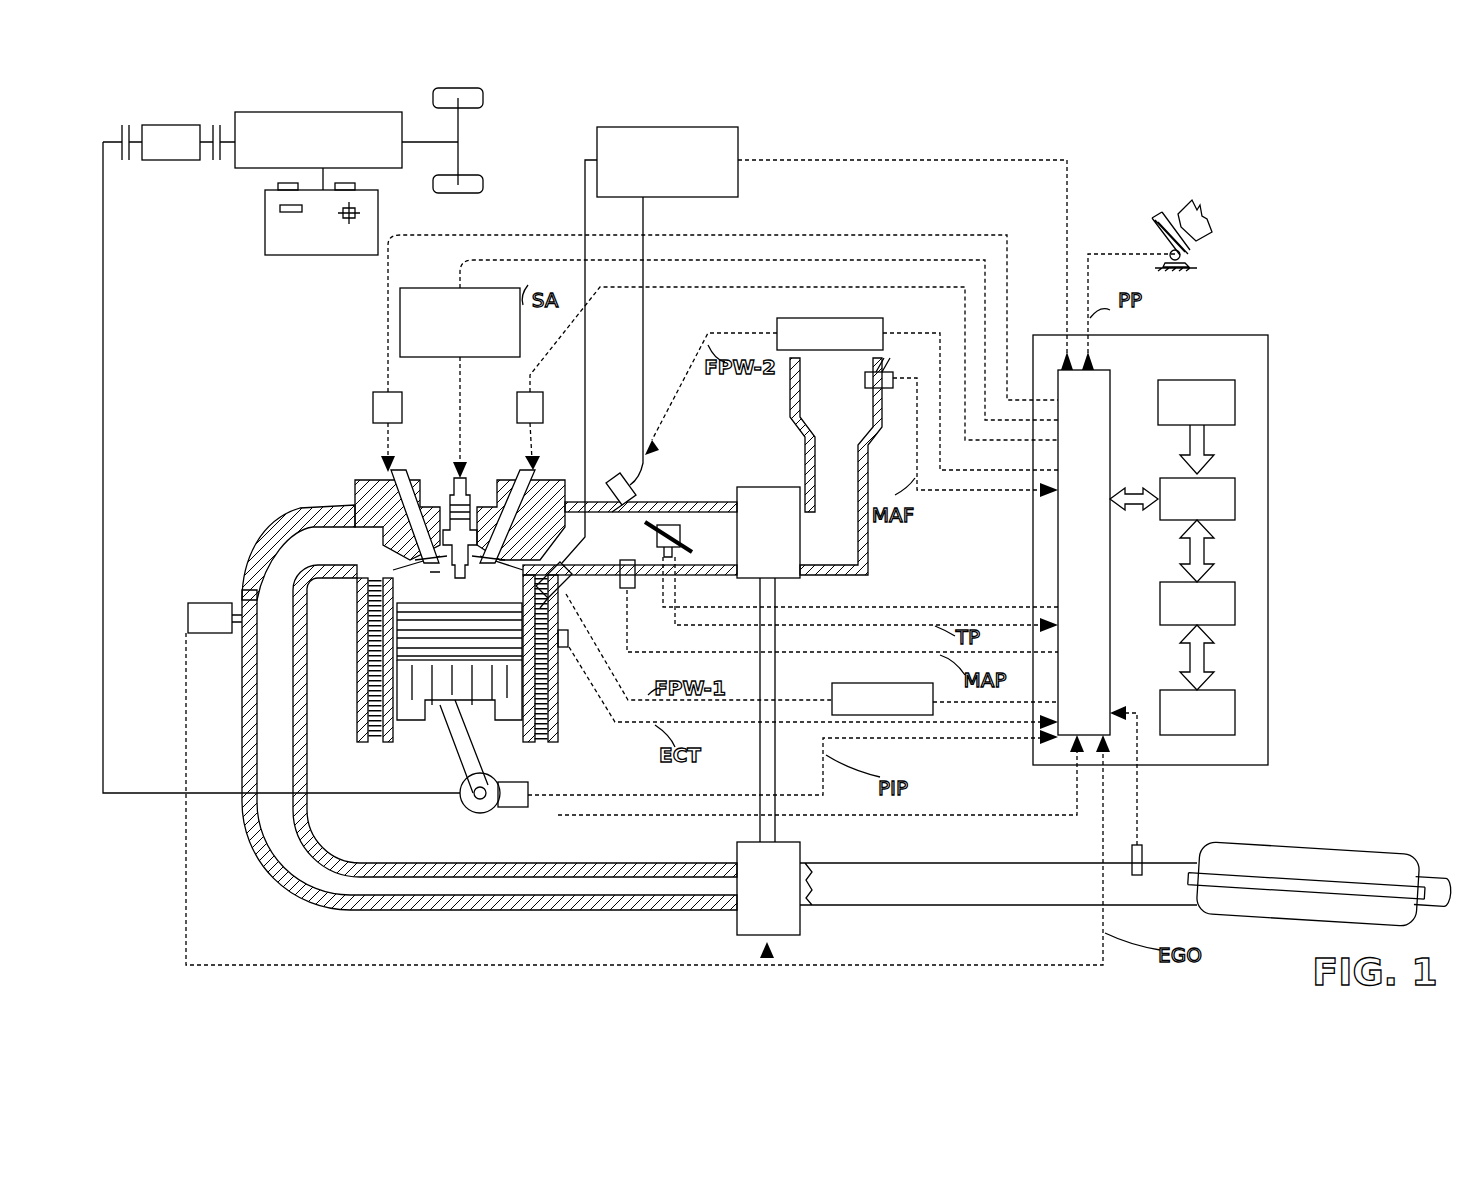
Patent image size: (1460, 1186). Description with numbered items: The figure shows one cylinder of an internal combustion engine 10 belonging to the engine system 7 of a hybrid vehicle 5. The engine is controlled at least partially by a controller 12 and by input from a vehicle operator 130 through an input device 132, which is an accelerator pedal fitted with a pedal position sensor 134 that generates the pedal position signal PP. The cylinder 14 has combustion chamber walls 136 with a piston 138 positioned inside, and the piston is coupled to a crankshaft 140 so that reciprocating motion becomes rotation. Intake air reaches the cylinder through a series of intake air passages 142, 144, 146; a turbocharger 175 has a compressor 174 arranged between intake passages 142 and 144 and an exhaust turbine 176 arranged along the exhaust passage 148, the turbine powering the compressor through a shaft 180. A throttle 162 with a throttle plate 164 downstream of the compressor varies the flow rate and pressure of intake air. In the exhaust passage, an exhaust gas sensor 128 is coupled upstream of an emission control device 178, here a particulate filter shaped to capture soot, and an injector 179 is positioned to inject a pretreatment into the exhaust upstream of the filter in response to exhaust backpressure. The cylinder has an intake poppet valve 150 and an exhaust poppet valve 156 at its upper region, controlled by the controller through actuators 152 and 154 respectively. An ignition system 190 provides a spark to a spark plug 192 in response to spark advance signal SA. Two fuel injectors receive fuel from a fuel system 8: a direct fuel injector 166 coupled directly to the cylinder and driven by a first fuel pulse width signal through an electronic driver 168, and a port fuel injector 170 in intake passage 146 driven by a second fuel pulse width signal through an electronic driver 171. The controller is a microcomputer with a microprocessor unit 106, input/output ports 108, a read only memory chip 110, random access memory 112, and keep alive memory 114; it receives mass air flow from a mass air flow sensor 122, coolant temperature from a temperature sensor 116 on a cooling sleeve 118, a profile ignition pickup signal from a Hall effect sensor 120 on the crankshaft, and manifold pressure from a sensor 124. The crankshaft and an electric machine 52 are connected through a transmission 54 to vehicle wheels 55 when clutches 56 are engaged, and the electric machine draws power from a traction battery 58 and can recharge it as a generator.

The vehicle 5 is at (1395, 126).
The engine system 7 is at (1369, 778).
The fuel system 8 is at (705, 127).
The internal combustion engine 10 is at (247, 409).
The controller 12 is at (1268, 335).
The cylinder 14 is at (365, 600).
The electric machine 52 is at (170, 160).
The transmission 54 is at (380, 168).
The vehicle wheels 55 is at (462, 193).
The clutches 56 is at (122, 128).
The traction battery 58 is at (318, 255).
The microprocessor unit 106 is at (1235, 490).
The input/output ports 108 is at (1110, 375).
The read only memory chip 110 is at (1235, 398).
The random access memory 112 is at (1235, 598).
The keep alive memory 114 is at (1235, 708).
The temperature sensor 116 is at (572, 660).
The cooling sleeve 118 is at (560, 722).
The Hall effect sensor 120 is at (512, 807).
The mass air flow sensor 122 is at (888, 372).
The manifold pressure sensor 124 is at (630, 590).
The exhaust gas sensor 128 is at (188, 610).
The vehicle operator 130 is at (1212, 220).
The input device 132 is at (1157, 232).
The pedal position sensor 134 is at (1185, 258).
The combustion chamber walls 136 is at (393, 735).
The piston 138 is at (447, 705).
The crankshaft 140 is at (472, 808).
The intake air passage 142 is at (836, 466).
The intake air passage 144 is at (651, 526).
The intake air passage 146 is at (620, 538).
The exhaust passage 148 is at (298, 552).
The intake poppet valve 150 is at (492, 540).
The actuator 152 is at (517, 405).
The actuator 154 is at (373, 400).
The exhaust poppet valve 156 is at (395, 545).
The throttle 162 is at (675, 525).
The throttle plate 164 is at (650, 520).
The fuel injector 166 is at (550, 570).
The electronic driver 168 is at (835, 683).
The fuel injector 170 is at (615, 485).
The electronic driver 171 is at (782, 318).
The compressor 174 is at (768, 532).
The turbocharger 175 is at (767, 958).
The exhaust turbine 176 is at (768, 888).
The emission control device 178 is at (1380, 855).
The injector 179 is at (1142, 845).
The shaft 180 is at (778, 830).
The ignition system 190 is at (445, 288).
The spark plug 192 is at (455, 515).